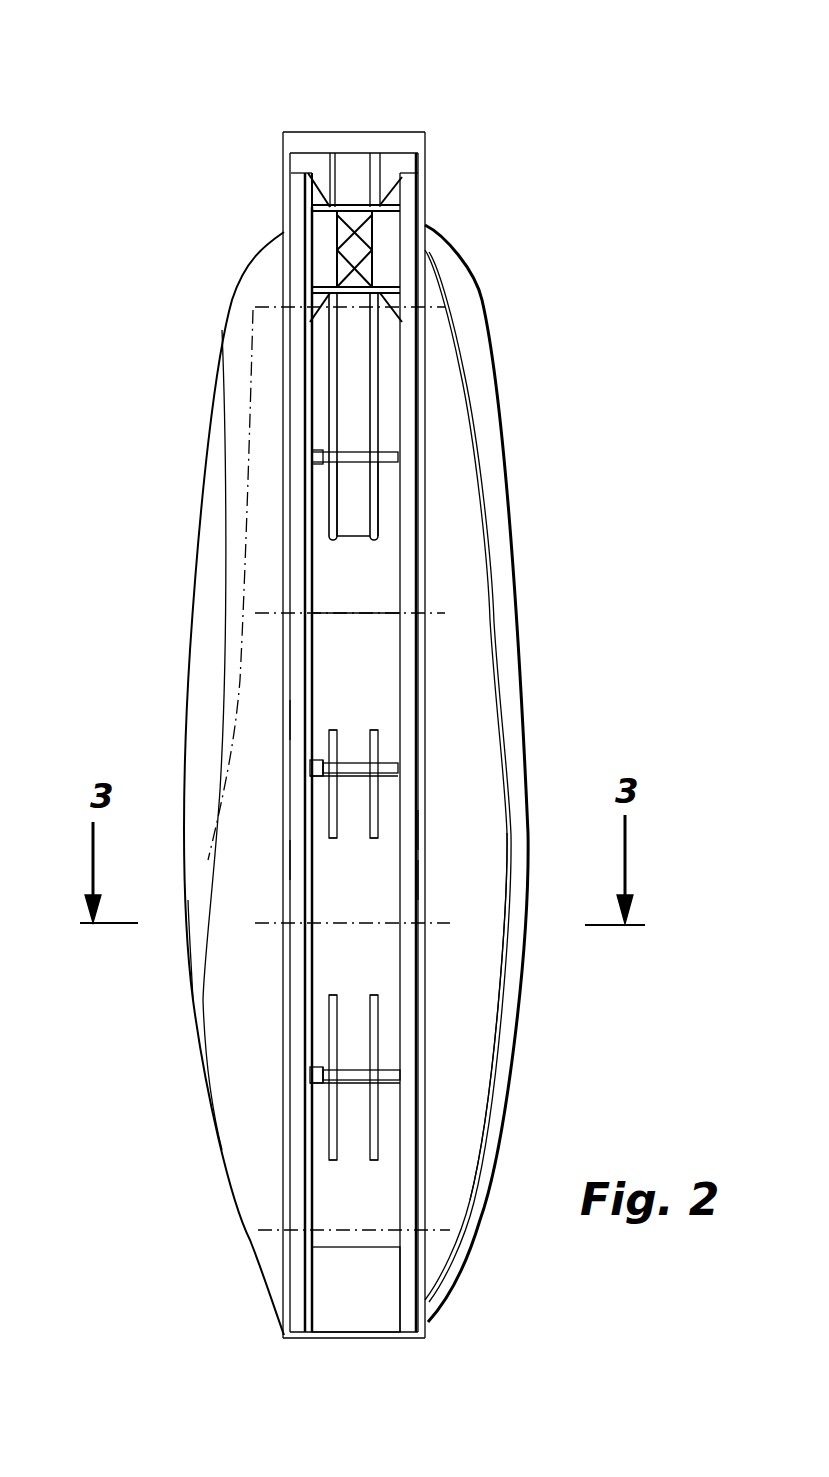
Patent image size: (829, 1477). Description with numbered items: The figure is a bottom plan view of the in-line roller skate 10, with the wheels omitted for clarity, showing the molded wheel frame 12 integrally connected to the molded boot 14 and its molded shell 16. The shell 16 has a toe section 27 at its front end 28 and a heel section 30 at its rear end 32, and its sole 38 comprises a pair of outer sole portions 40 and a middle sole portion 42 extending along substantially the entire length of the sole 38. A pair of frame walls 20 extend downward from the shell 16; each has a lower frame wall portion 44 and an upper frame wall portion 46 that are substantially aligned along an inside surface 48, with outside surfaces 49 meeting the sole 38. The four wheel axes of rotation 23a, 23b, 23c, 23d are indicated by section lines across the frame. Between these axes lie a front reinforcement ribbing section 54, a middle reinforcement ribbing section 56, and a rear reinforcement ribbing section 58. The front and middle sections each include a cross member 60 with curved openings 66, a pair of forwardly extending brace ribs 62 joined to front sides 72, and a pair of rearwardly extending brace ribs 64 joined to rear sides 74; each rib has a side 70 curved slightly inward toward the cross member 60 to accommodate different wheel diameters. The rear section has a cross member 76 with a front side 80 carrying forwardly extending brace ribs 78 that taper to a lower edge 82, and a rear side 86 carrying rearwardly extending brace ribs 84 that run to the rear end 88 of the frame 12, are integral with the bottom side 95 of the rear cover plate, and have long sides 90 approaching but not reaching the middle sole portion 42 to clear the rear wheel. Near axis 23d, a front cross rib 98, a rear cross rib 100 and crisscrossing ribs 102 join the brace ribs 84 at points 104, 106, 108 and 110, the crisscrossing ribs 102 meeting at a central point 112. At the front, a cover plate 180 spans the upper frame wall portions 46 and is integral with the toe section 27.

The in-line roller skate 10 is at (640, 28).
The molded wheel frame 12 is at (608, 76).
The molded boot 14 is at (258, 1217).
The molded shell 16 is at (466, 330).
The frame walls 20 is at (272, 150).
The axis of rotation 23a is at (260, 1229).
The axis of rotation 23b is at (258, 926).
The axis of rotation 23c is at (254, 612).
The axis of rotation 23d is at (252, 305).
The toe section 27 is at (265, 1269).
The front end 28 is at (272, 1309).
The heel section 30 is at (462, 238).
The rear end 32 is at (444, 181).
The sole 38 is at (206, 935).
The outer sole portions 40 is at (455, 692).
The middle sole portion 42 is at (352, 668).
The lower frame wall portion 44 is at (440, 888).
The upper frame wall portion 46 is at (282, 720).
The inside surface 48 is at (318, 614).
The outside surfaces 49 is at (438, 833).
The front reinforcement ribbing section 54 is at (425, 938).
The middle reinforcement ribbing section 56 is at (283, 862).
The rear reinforcement ribbing section 58 is at (348, 546).
The cross member 60 is at (306, 775).
The forwardly extending brace ribs 62 is at (370, 840).
The rearwardly extending brace ribs 64 is at (368, 746).
The curved openings 66 is at (318, 770).
The side 70 is at (382, 757).
The front sides 72 is at (318, 788).
The rear sides 74 is at (320, 765).
The cross member 76 is at (305, 452).
The forwardly extending brace ribs 78 is at (350, 505).
The front side 80 is at (340, 480).
The lower edge 82 is at (360, 530).
The rearwardly extending brace ribs 84 is at (357, 158).
The rear side 86 is at (347, 417).
The rear end 88 is at (284, 140).
The long sides 90 is at (358, 370).
The bottom side 95 is at (318, 165).
The front cross rib 98 is at (348, 307).
The rear cross rib 100 is at (350, 198).
The crisscrossing ribs 102 is at (337, 252).
The point 104 is at (335, 278).
The point 106 is at (345, 273).
The point 108 is at (312, 207).
The point 110 is at (356, 224).
The point 112 is at (440, 256).
The cover plate 180 is at (367, 1302).